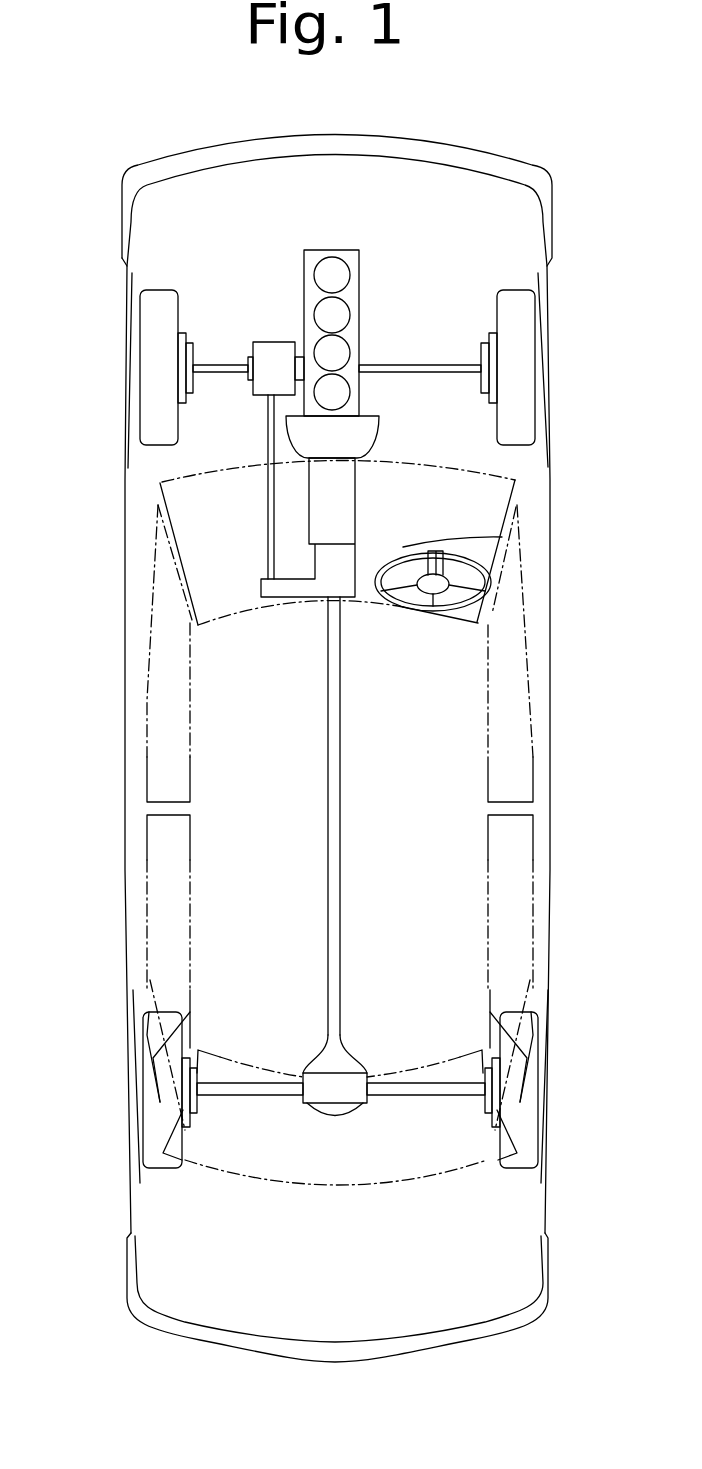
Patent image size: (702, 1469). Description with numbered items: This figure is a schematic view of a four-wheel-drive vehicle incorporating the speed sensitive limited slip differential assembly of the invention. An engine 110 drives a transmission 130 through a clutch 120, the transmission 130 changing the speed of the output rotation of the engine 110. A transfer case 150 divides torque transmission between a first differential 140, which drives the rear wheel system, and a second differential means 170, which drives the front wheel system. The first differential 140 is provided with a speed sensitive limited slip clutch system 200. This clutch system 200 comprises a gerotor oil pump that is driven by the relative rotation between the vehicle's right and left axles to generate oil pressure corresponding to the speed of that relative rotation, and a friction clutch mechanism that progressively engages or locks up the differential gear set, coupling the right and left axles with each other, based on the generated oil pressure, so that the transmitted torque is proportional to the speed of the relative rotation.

The engine 110 is at (353, 280).
The clutch 120 is at (365, 437).
The transmission 130 is at (339, 518).
The first differential 140 is at (348, 1080).
The transfer case 150 is at (345, 592).
The second differential means 170 is at (273, 347).
The speed sensitive limited slip clutch system 200 is at (323, 1063).